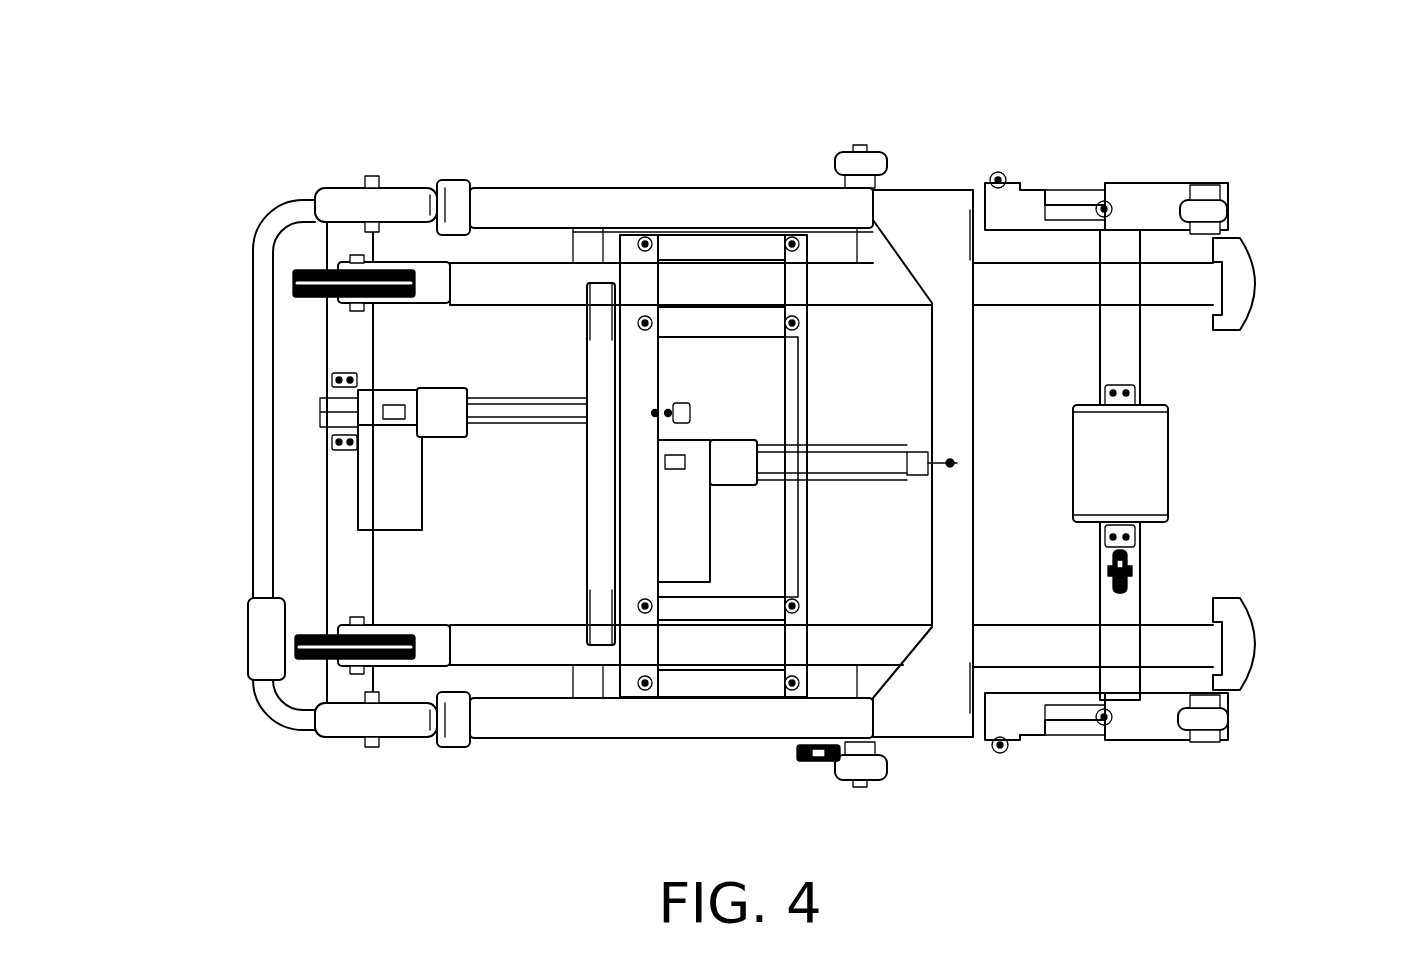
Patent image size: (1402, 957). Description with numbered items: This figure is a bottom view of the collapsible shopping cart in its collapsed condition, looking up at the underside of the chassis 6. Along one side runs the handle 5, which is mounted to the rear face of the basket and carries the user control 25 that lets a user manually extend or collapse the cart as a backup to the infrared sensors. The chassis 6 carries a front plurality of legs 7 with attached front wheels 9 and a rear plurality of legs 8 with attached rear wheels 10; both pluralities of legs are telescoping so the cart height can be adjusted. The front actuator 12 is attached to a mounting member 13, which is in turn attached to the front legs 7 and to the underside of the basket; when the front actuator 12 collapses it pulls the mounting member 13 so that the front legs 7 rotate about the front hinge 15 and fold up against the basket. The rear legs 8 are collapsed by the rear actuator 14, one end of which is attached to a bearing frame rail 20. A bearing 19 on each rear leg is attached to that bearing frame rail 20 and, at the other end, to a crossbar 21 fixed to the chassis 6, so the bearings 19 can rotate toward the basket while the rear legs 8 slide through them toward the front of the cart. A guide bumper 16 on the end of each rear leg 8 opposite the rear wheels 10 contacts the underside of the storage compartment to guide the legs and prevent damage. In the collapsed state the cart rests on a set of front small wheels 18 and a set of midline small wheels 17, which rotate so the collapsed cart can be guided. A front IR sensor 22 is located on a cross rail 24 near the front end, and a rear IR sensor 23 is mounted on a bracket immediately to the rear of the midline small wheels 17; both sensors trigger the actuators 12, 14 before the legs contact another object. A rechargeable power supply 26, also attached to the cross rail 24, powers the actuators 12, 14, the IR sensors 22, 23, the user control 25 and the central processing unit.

The handle 5 is at (250, 530).
The chassis 6 is at (325, 352).
The front plurality of legs 7 is at (625, 186).
The rear plurality of legs 8 is at (480, 740).
The front wheels 9 is at (343, 185).
The rear wheels 10 is at (292, 268).
The front actuator 12 is at (735, 438).
The mounting member 13 is at (935, 740).
The rear actuator 14 is at (356, 492).
The front hinge 15 is at (1055, 740).
The guide bumper 16 is at (1263, 275).
The midline small wheels 17 is at (880, 148).
The front small wheels 18 is at (1230, 200).
The bearing 19 is at (703, 232).
The bearing frame rail 20 is at (615, 660).
The crossbar 21 is at (785, 565).
The front IR sensor 22 is at (1130, 570).
The rear IR sensor 23 is at (815, 762).
The cross rail 24 is at (1143, 372).
The user control 25 is at (246, 640).
The power supply 26 is at (1168, 453).